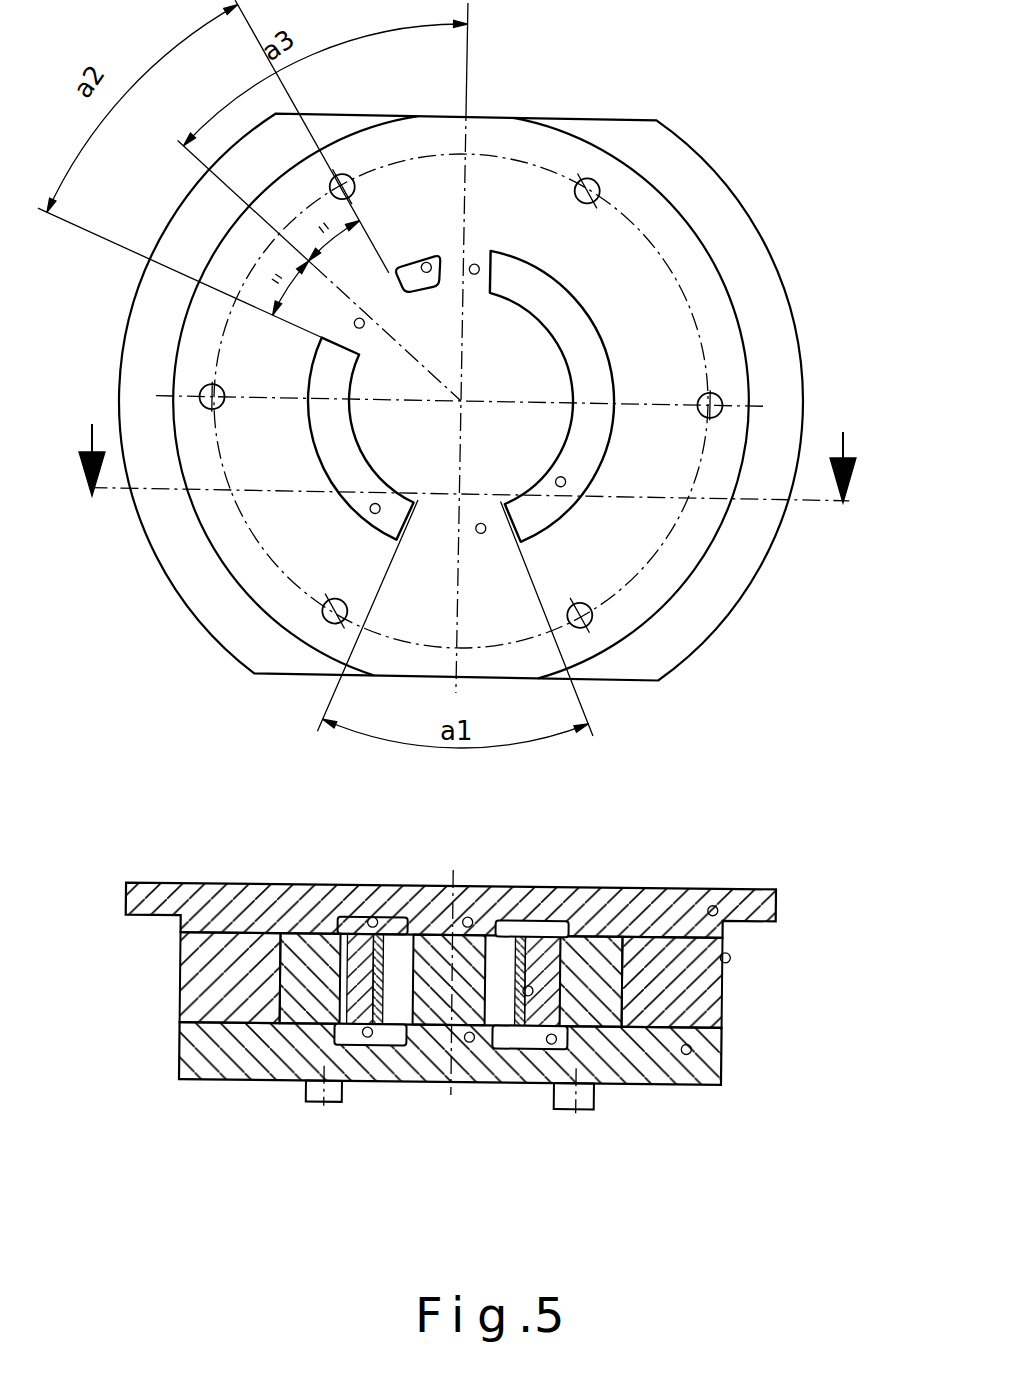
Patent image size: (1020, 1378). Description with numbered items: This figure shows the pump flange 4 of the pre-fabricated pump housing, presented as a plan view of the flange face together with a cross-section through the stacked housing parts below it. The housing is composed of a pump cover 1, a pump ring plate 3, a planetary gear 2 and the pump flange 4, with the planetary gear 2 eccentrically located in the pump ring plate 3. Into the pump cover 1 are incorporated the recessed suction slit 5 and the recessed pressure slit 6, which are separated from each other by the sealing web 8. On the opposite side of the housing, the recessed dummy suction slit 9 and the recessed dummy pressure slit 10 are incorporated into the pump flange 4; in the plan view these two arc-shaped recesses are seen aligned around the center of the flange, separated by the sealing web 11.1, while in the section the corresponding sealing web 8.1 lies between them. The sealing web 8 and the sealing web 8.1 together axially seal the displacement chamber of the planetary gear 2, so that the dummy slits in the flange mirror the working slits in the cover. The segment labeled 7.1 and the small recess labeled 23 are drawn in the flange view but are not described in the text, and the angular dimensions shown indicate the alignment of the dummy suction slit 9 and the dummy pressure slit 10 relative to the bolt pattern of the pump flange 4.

The pump cover 1 is at (692, 1047).
The planetary gear 2 is at (533, 991).
The pump ring plate 3 is at (729, 953).
The pump flange 4 is at (716, 906).
The suction slit 5 is at (557, 1040).
The pressure slit 6 is at (369, 1038).
The sealing web 8 is at (474, 1040).
The sealing web 8.1 is at (488, 531).
The dummy suction slit 9 is at (567, 483).
The dummy pressure slit 10 is at (427, 264).
The segment 7.1 is at (489, 257).
The sealing web 11.1 is at (363, 323).
The pocket 23 is at (436, 258).